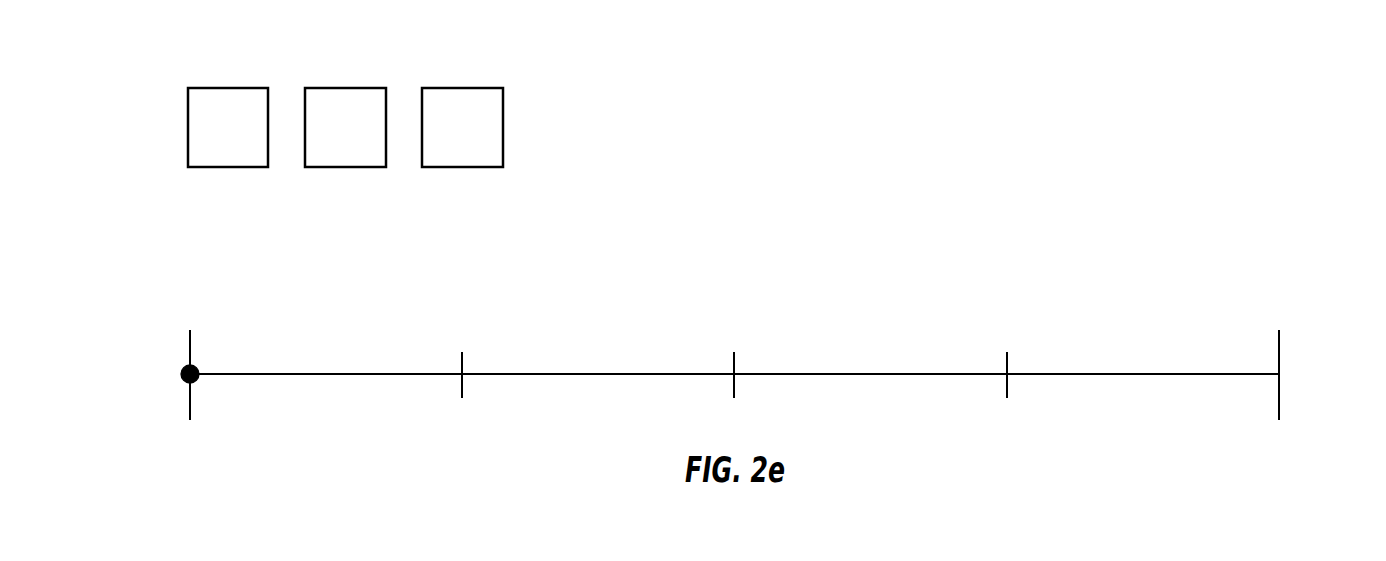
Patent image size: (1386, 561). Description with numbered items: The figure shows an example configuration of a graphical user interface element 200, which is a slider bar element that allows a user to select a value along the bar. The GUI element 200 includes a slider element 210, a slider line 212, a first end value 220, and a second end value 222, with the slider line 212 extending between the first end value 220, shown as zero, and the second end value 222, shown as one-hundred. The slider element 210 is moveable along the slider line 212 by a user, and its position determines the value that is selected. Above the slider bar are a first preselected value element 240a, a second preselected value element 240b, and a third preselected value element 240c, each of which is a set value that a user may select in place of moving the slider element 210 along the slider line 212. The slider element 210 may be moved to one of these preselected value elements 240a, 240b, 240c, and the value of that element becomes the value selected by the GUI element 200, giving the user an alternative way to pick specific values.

The graphical user interface element 200 is at (1296, 332).
The slider element 210 is at (182, 370).
The slider line 212 is at (305, 374).
The first end value 220 is at (178, 420).
The second end value 222 is at (1298, 412).
The first preselected value element 240a is at (237, 88).
The second preselected value element 240b is at (353, 88).
The third preselected value element 240c is at (472, 88).